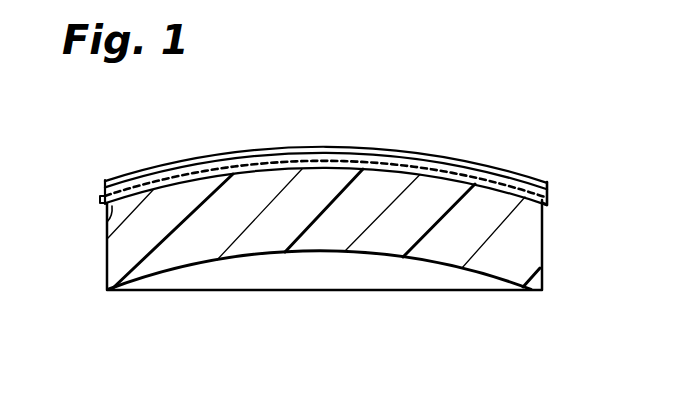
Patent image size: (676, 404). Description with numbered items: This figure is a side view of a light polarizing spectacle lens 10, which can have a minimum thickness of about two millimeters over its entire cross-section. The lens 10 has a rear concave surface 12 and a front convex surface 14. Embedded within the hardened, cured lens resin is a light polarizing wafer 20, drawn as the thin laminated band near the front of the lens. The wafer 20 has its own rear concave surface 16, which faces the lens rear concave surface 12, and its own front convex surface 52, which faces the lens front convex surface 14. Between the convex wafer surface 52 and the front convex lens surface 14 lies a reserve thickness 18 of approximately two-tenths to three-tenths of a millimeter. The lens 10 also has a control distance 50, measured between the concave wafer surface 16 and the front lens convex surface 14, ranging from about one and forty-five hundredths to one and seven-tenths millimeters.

The light polarizing lens 10 is at (112, 143).
The rear concave surface 12 is at (163, 276).
The front convex surface 14 is at (178, 162).
The rear concave surface 16 is at (112, 206).
The reserve thickness 18 is at (302, 152).
The light polarizing wafer 20 is at (102, 193).
The control distance 50 is at (553, 180).
The front convex surface 52 is at (225, 162).